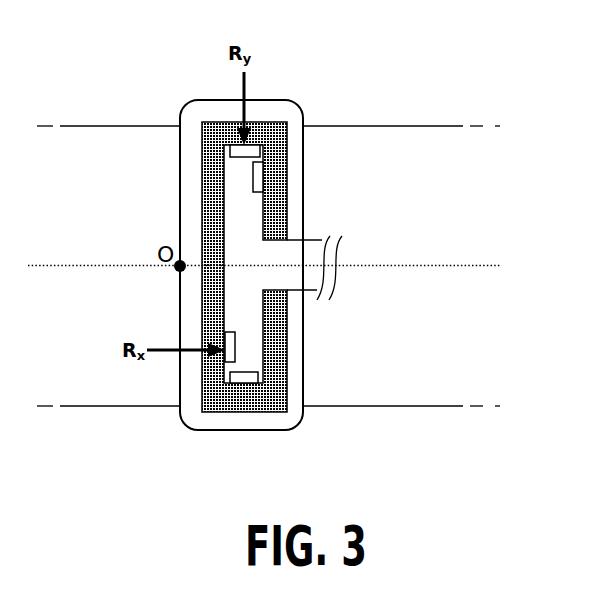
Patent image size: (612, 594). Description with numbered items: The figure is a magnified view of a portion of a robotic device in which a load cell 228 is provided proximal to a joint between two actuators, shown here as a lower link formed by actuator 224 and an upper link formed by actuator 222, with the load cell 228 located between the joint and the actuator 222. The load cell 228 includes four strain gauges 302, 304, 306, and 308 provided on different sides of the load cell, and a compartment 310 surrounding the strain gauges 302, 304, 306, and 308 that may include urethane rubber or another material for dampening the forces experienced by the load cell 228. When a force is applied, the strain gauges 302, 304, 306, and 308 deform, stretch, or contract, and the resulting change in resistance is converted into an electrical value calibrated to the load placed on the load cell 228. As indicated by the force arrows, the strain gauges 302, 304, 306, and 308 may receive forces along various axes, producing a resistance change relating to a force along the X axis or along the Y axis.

The actuator 222 is at (462, 407).
The actuator 224 is at (83, 407).
The load cell 228 is at (283, 100).
The strain gauge 302 is at (268, 151).
The strain gauge 304 is at (270, 177).
The strain gauge 306 is at (252, 394).
The strain gauge 308 is at (219, 366).
The compartment 310 is at (292, 200).